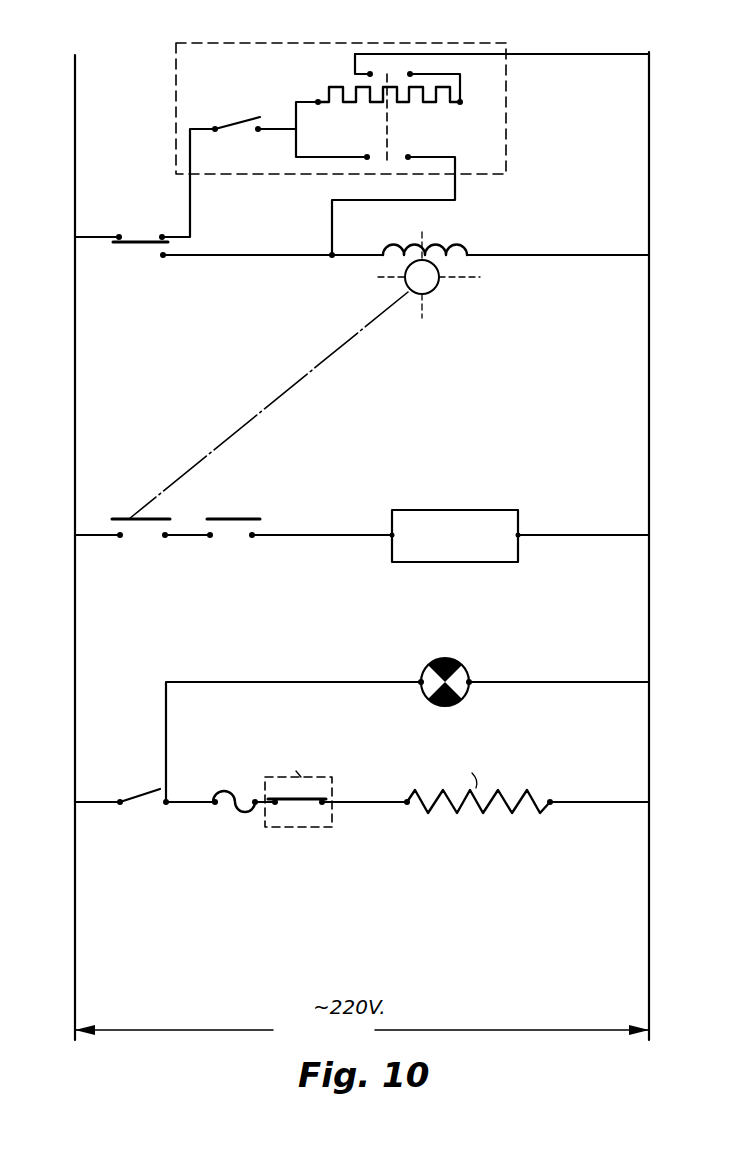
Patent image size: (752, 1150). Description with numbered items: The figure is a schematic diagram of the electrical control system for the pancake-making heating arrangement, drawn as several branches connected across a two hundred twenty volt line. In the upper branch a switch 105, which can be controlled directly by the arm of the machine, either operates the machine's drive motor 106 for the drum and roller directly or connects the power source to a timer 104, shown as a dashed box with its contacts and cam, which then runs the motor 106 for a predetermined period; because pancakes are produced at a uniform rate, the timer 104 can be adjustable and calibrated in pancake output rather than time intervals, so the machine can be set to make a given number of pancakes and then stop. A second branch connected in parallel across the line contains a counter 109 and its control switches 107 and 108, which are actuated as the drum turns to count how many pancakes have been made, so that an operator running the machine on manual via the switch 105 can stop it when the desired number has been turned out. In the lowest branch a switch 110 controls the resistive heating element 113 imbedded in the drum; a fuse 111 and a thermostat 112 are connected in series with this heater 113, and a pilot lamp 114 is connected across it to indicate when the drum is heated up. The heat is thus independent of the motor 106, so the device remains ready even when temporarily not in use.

The timer 104 is at (312, 50).
The switch 105 is at (137, 233).
The drive motor 106 is at (447, 271).
The control switch 107 is at (150, 517).
The control switch 108 is at (243, 517).
The counter 109 is at (507, 518).
The switch 110 is at (122, 800).
The fuse 111 is at (225, 788).
The thermostat 112 is at (302, 818).
The resistive heating element 113 is at (497, 812).
The pilot lamp 114 is at (458, 672).